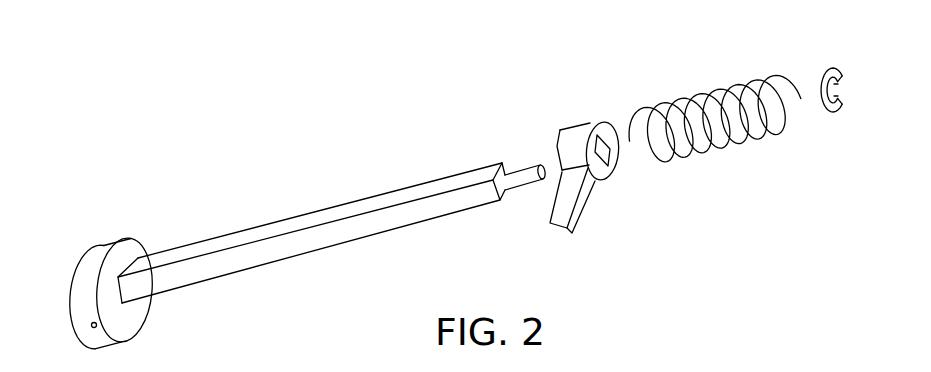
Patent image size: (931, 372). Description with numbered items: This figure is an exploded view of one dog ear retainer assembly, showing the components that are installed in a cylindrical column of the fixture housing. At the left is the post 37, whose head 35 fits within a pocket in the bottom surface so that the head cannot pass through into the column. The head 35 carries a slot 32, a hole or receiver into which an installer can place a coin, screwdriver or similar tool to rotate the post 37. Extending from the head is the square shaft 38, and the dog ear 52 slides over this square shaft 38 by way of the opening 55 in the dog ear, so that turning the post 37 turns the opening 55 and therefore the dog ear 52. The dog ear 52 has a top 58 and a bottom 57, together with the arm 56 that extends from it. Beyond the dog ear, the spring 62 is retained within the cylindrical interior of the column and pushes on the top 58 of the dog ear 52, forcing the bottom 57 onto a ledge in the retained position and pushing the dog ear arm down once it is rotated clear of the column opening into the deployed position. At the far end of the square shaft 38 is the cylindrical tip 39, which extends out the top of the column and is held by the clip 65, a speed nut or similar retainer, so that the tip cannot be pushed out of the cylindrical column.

The slot 32 is at (91, 328).
The head 35 is at (93, 243).
The post 37 is at (288, 193).
The square shaft 38 is at (303, 255).
The cylindrical tip 39 is at (522, 165).
The dog ear 52 is at (582, 165).
The opening 55 is at (597, 133).
The arm 56 is at (551, 217).
The bottom 57 is at (557, 139).
The top 58 is at (619, 169).
The spring 62 is at (692, 155).
The clip 65 is at (823, 68).